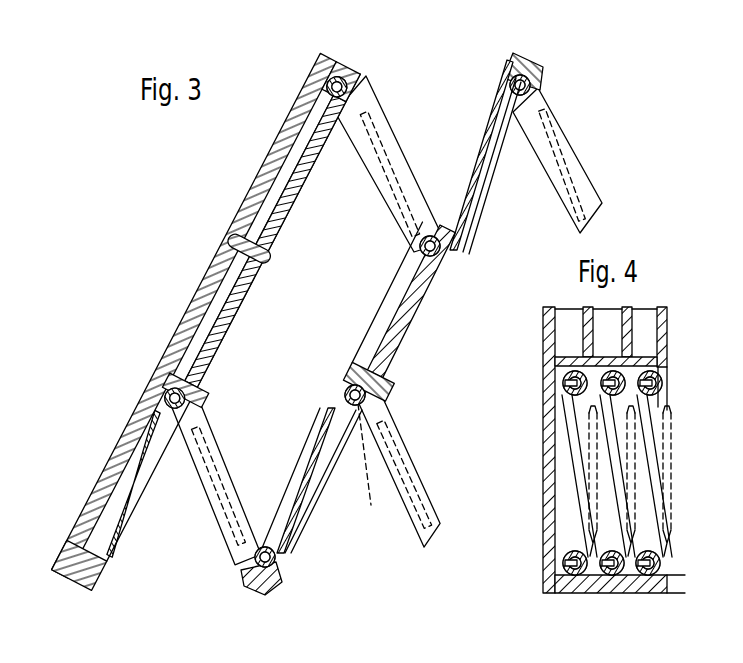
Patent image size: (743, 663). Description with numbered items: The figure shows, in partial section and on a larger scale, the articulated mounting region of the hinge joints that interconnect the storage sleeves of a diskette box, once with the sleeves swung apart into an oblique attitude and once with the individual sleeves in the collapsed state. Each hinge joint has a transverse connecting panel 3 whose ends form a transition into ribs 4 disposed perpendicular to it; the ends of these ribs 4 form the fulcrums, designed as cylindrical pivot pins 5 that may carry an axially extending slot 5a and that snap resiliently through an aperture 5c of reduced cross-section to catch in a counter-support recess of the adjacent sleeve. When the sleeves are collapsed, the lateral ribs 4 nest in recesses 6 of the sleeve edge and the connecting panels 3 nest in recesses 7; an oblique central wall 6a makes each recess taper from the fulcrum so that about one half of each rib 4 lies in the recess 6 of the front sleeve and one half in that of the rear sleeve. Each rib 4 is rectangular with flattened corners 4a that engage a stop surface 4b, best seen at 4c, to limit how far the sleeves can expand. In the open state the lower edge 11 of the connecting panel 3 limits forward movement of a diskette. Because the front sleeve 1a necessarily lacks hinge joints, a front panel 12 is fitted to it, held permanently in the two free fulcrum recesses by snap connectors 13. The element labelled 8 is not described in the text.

In FIG. 3, the front sleeve 1a is at (212, 332).
In FIG. 3, the transverse connecting panel 3 is at (413, 462).
In FIG. 4, the transverse connecting panel 3 is at (597, 456).
In FIG. 3, the rib 4 is at (426, 515).
In FIG. 4, the rib 4 is at (580, 412).
In FIG. 4, the flattened corner 4a is at (668, 388).
In FIG. 4, the stop surface 4b is at (663, 373).
In FIG. 3, the rib detail location 4c is at (372, 383).
In FIG. 3, the pivot pin 5 is at (278, 577).
In FIG. 3, the axially extending slot 5a is at (180, 412).
In FIG. 3, the aperture 5c is at (540, 92).
In FIG. 3, the recess 6 is at (299, 308).
In FIG. 3, the oblique central wall 6a is at (322, 424).
In FIG. 3, the recess 7 is at (476, 156).
In FIG. 3, the hinge joint 8 is at (373, 393).
In FIG. 3, the lower edge 11 is at (416, 241).
In FIG. 3, the front panel 12 is at (112, 458).
In FIG. 4, the front panel 12 is at (596, 470).
In FIG. 3, the snap connector 13 is at (230, 240).
In FIG. 4, the snap connector 13 is at (575, 567).